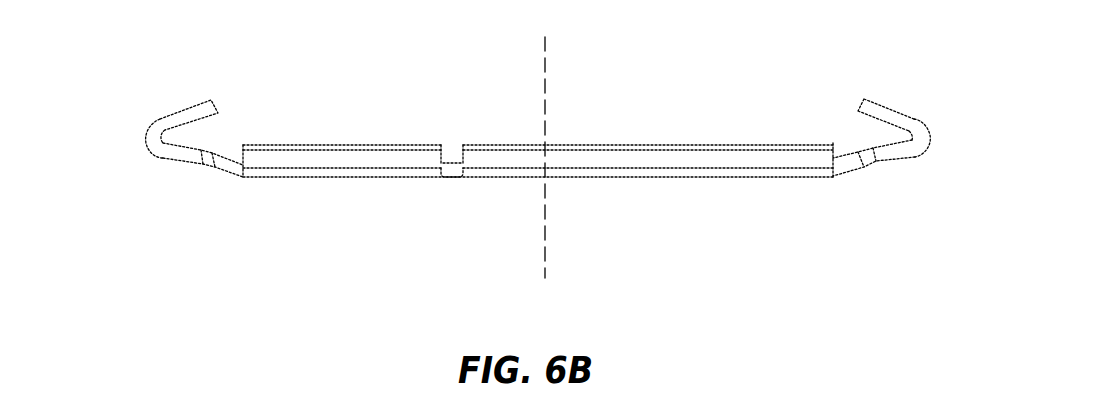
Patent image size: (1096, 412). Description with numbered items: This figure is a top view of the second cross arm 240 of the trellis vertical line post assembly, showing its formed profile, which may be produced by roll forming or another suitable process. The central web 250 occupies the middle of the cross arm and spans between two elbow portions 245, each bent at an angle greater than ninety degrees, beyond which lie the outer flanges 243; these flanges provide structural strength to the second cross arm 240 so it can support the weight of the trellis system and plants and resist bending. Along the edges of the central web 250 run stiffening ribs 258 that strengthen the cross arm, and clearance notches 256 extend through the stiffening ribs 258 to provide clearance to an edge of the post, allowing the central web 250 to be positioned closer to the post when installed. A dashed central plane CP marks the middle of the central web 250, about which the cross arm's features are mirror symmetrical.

The second cross arm 240 is at (342, 163).
The outer flanges 243 is at (199, 112).
The elbow portions 245 is at (152, 132).
The central web 250 is at (655, 175).
The clearance notches 256 is at (462, 163).
The stiffening ribs 258 is at (700, 152).
The central plane CP is at (543, 63).